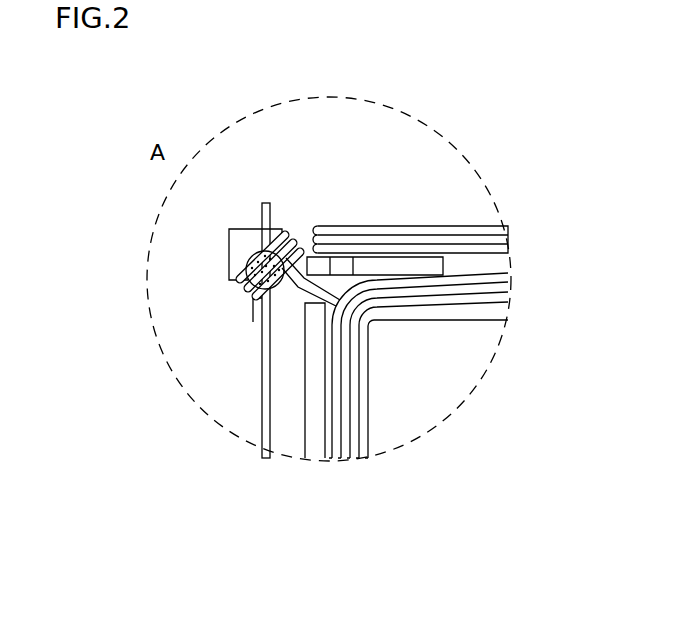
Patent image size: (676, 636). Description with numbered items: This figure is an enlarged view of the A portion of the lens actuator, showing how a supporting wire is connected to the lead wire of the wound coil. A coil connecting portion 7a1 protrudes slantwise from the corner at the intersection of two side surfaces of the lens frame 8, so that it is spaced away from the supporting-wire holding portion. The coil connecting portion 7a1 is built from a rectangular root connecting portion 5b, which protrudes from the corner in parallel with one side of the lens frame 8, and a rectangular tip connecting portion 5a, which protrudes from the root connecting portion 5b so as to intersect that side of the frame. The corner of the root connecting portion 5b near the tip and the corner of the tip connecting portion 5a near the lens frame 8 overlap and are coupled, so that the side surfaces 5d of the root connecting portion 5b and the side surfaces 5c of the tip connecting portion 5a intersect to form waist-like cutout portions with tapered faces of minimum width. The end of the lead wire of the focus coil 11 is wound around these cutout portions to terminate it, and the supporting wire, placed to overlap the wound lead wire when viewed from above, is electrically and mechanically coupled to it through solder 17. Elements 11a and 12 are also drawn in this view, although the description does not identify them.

The A portion A is at (329, 279).
The solder 17 is at (252, 254).
The coil connecting portion 7a1 is at (83, 217).
The tip connecting portion 5a is at (238, 257).
The root connecting portion 5b is at (292, 306).
The side surfaces of tip connecting portion 5c is at (230, 283).
The side surfaces of root connecting portion 5d is at (250, 306).
The lens frame 8 is at (315, 447).
The focus coil 11 is at (417, 305).
The lead wire ends 11a is at (313, 250).
The laminated strips 12 is at (410, 227).